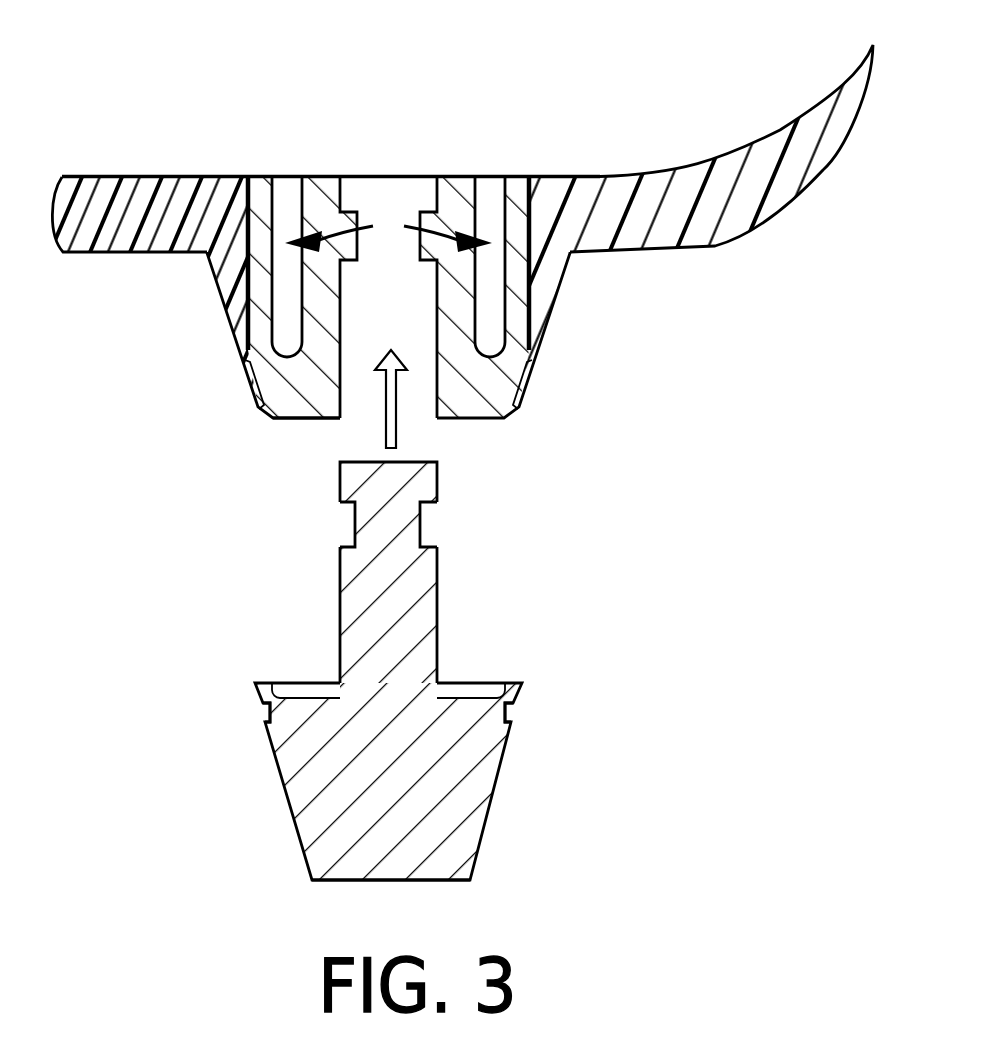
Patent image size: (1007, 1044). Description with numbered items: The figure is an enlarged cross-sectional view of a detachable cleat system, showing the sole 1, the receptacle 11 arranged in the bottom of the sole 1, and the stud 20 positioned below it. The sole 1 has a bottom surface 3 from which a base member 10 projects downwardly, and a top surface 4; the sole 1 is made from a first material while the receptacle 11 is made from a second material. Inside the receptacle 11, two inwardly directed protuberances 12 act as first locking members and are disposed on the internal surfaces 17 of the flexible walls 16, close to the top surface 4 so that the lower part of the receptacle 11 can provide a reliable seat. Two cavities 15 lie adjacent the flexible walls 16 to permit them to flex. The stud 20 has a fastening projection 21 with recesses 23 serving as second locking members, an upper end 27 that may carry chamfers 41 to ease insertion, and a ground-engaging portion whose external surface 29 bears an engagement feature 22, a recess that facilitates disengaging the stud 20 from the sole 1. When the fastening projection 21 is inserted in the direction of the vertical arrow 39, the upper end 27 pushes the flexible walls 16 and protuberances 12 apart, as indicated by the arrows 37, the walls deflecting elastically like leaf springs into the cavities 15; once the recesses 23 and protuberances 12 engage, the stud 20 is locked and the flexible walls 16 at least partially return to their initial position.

The sole 1 is at (462, 230).
The bottom surface 3 is at (740, 239).
The top surface 4 is at (462, 178).
The base member 10 is at (227, 293).
The receptacle 11 is at (280, 421).
The inwardly directed protuberance 12 is at (425, 218).
The cavity 15 is at (495, 216).
The flexible wall 16 is at (528, 365).
The internal surface 17 is at (437, 312).
The stud 20 is at (368, 812).
The fastening projection 21 is at (397, 602).
The engagement feature 22 is at (510, 710).
The recess 23 is at (422, 518).
The upper end 27 is at (407, 660).
The external surface 29 is at (483, 837).
The arrows 37 is at (532, 297).
The vertical arrow 39 is at (397, 438).
The chamfer 41 is at (347, 452).